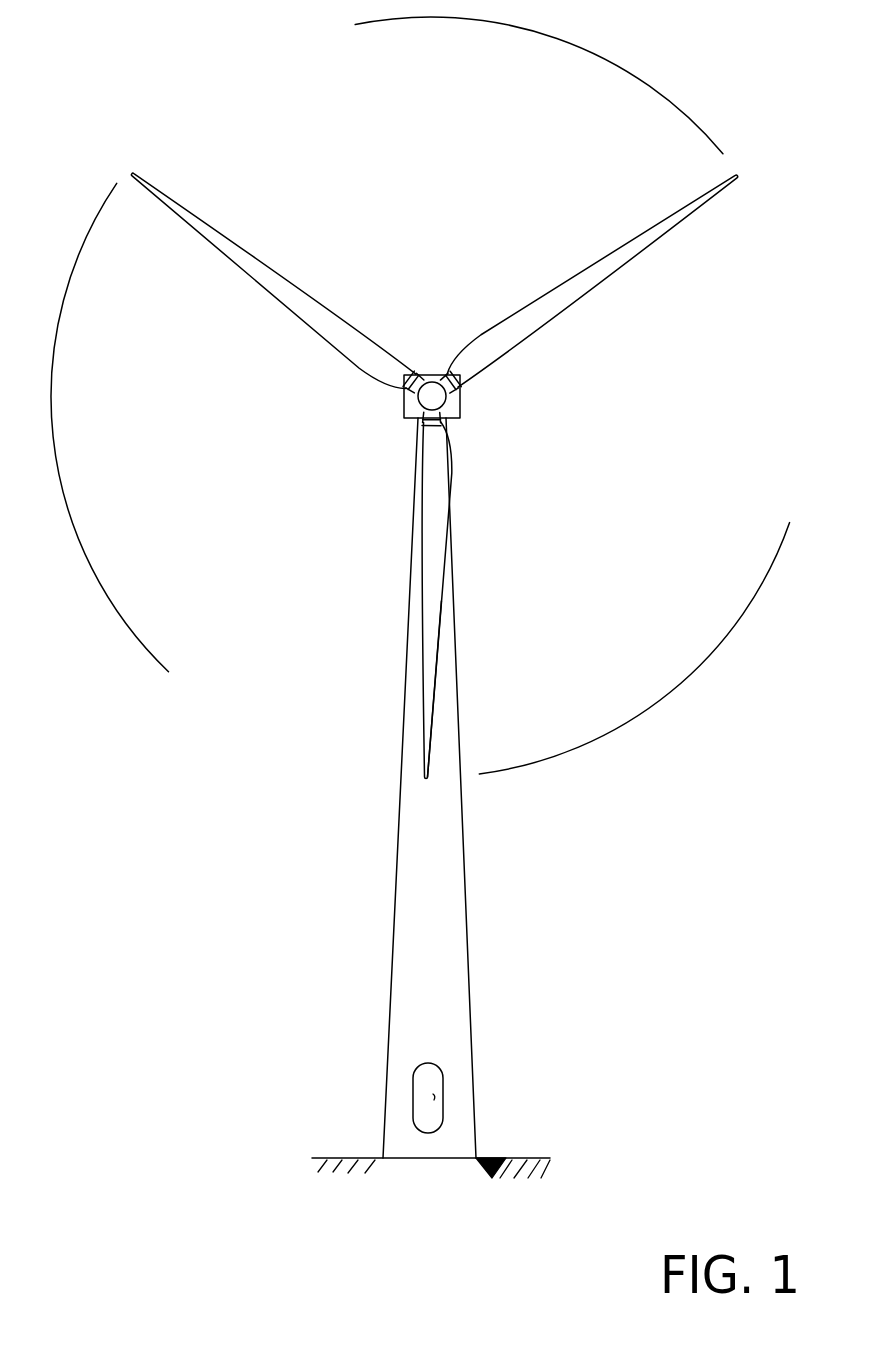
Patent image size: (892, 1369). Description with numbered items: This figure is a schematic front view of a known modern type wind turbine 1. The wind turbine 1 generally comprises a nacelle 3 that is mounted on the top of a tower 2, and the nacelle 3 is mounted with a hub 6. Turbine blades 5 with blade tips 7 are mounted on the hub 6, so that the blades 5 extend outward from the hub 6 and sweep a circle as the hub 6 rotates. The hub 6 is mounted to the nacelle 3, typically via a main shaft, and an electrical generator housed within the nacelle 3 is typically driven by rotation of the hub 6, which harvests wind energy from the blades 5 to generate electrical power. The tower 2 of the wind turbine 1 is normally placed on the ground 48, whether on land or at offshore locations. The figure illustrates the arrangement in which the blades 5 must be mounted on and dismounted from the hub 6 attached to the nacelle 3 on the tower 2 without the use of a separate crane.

The wind turbine 1 is at (372, 983).
The tower 2 is at (457, 864).
The nacelle 3 is at (466, 423).
The turbine blades 5 is at (433, 633).
The hub 6 is at (433, 388).
The blade tips 7 is at (430, 705).
The ground 48 is at (525, 1155).